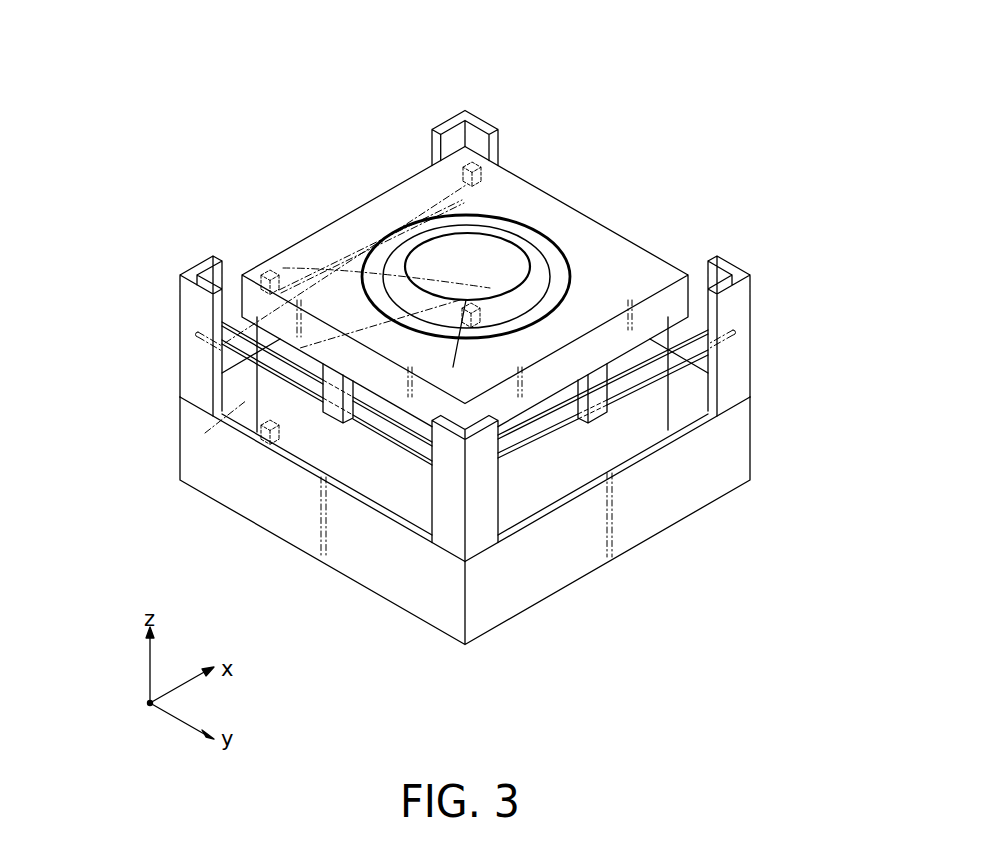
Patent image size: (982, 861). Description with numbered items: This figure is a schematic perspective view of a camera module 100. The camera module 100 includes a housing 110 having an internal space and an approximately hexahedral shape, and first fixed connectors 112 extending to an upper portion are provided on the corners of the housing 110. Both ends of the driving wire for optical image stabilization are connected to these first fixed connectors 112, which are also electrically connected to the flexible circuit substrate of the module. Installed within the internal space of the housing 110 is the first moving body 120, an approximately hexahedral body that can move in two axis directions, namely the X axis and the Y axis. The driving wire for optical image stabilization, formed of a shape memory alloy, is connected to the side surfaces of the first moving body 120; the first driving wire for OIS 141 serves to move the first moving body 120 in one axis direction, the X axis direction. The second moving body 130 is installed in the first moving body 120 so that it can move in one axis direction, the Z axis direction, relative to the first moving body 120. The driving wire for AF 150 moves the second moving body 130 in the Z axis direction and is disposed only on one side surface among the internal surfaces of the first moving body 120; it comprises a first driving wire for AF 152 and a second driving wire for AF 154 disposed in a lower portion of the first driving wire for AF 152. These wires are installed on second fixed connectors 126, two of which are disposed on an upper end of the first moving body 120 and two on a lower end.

The camera module 100 is at (493, 39).
The housing 110 is at (532, 578).
The first fixed connector 112 is at (742, 338).
The first moving body 120 is at (633, 257).
The second fixed connector 126 is at (463, 170).
The second moving body 130 is at (543, 250).
The first driving wire for OIS 141 is at (437, 442).
The driving wire for AF 150 is at (90, 363).
The first driving wire for AF 152 is at (206, 354).
The second driving wire for AF 154 is at (247, 400).